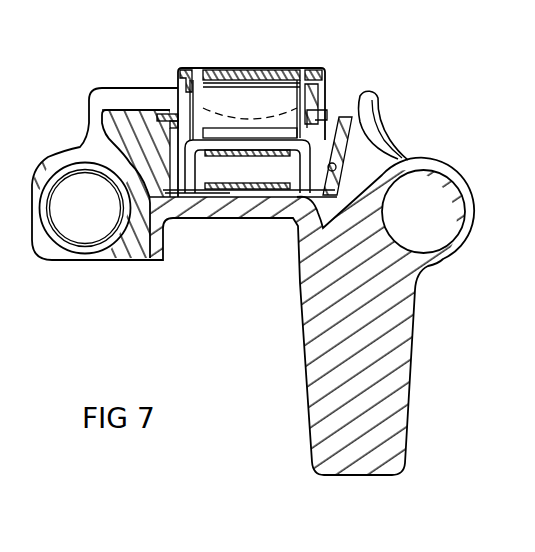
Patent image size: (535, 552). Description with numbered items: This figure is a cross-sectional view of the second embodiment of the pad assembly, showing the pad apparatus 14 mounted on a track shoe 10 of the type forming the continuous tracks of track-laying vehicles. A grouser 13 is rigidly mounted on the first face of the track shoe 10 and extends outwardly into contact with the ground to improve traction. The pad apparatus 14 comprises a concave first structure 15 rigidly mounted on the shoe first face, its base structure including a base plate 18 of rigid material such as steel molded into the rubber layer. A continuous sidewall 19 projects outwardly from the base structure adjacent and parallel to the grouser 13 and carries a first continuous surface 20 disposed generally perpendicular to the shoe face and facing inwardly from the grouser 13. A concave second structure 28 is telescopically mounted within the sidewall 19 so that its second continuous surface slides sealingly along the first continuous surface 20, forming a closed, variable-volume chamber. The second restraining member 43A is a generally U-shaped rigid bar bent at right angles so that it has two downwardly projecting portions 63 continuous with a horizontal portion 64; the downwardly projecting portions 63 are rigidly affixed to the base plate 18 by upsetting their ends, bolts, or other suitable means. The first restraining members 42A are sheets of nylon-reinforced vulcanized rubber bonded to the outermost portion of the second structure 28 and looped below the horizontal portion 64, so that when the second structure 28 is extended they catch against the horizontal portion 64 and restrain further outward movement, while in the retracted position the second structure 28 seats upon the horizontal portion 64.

The track shoe 10 is at (99, 262).
The grouser 13 is at (362, 97).
The pad apparatus 14 is at (180, 63).
The concave first structure 15 is at (136, 108).
The base plate 18 is at (260, 197).
The continuous sidewall 19 is at (302, 142).
The first continuous surface 20 is at (336, 167).
The concave second structure 28 is at (306, 67).
The first restraining members 42A is at (198, 115).
The second restraining member 43A is at (186, 202).
The downwardly projecting portions 63 is at (213, 173).
The horizontal portion 64 is at (245, 132).